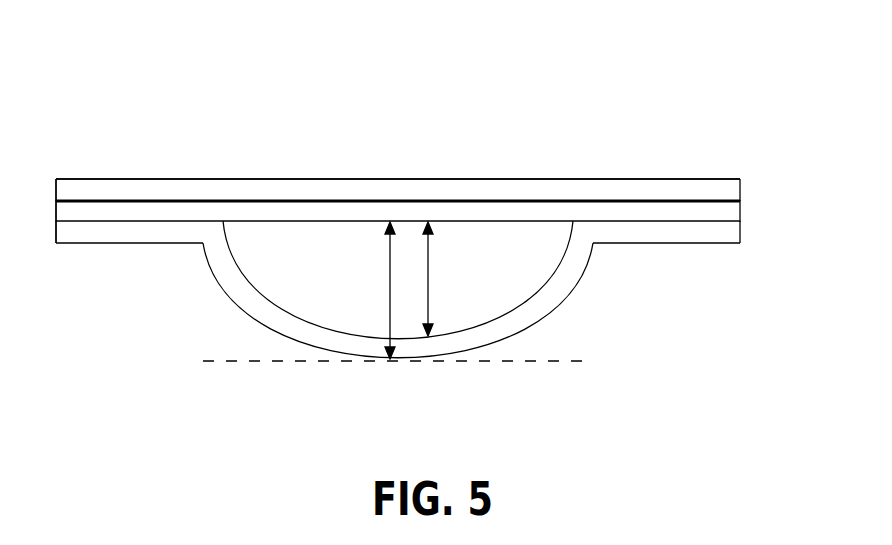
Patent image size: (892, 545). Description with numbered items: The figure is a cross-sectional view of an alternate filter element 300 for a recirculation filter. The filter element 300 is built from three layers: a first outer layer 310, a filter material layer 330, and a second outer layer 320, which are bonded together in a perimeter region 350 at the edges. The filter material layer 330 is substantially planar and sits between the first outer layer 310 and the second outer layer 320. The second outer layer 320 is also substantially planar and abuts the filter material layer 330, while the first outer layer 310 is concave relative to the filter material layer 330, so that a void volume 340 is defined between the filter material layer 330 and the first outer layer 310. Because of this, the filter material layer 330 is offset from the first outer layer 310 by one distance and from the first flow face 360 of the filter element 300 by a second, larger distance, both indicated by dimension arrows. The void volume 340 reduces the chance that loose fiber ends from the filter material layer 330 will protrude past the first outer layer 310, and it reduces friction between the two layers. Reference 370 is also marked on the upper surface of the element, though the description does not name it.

The filter element 300 is at (273, 80).
The first outer layer 310 is at (742, 231).
The second outer layer 320 is at (699, 188).
The filter material layer 330 is at (742, 213).
The void volume 340 is at (344, 306).
The perimeter region 350 is at (198, 162).
The first flow face 360 is at (479, 372).
The top surface 370 is at (477, 146).